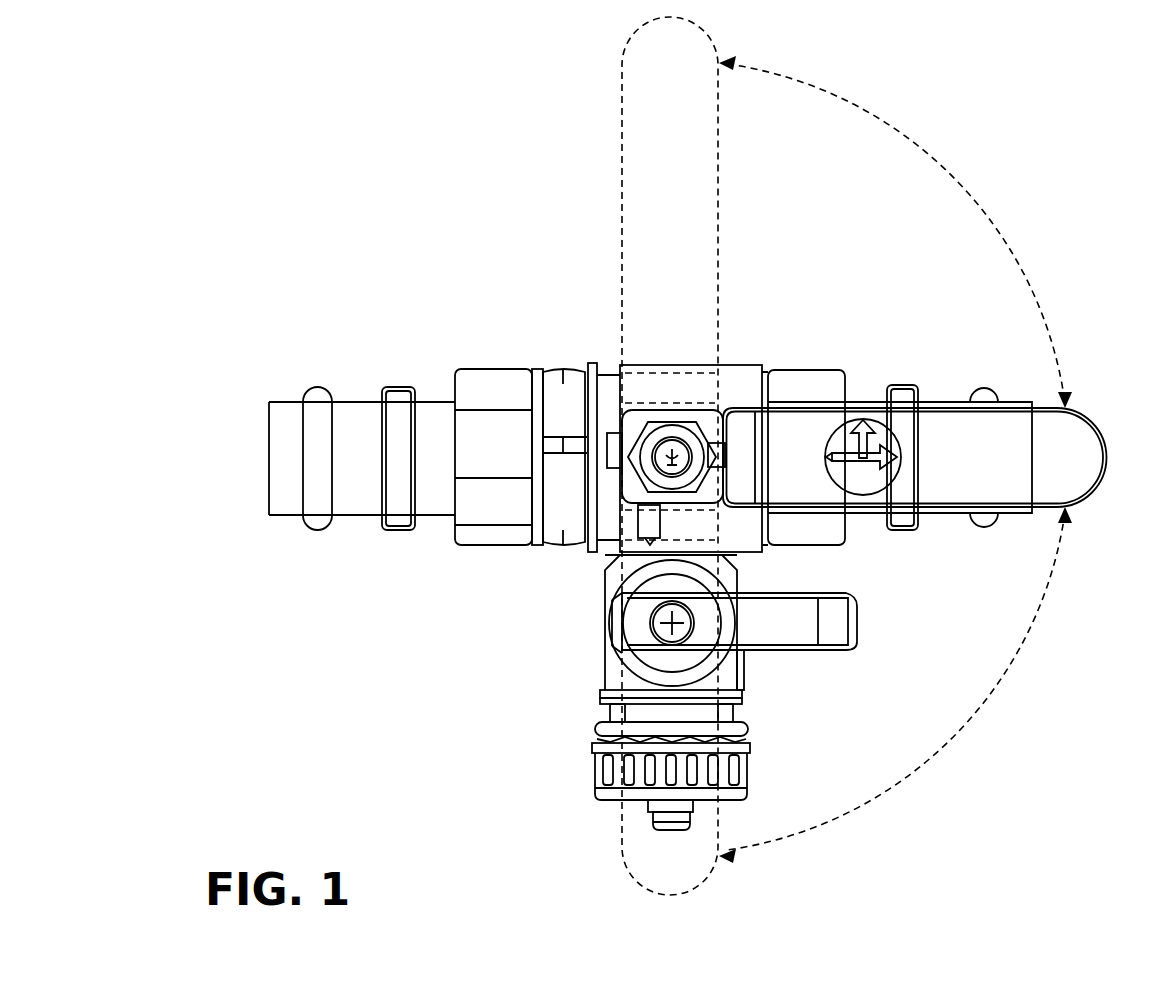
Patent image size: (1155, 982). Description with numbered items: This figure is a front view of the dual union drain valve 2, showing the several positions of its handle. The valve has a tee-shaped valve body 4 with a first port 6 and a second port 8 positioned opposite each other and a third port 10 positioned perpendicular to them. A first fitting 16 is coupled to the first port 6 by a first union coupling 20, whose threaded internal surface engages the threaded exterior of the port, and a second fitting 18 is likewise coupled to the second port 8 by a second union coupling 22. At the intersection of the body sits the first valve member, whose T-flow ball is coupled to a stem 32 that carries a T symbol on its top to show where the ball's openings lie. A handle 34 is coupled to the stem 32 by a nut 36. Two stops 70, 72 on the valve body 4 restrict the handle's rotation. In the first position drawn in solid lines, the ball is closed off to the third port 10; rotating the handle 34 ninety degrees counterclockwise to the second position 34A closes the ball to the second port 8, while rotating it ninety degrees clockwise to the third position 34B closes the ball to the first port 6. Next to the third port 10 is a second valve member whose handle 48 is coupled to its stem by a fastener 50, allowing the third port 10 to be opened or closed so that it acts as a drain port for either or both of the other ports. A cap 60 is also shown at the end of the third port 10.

The dual union drain valve 2 is at (742, 345).
The valve body 4 is at (677, 378).
The first port 6 is at (540, 368).
The second port 8 is at (768, 370).
The third port 10 is at (742, 700).
The first fitting 16 is at (358, 408).
The second fitting 18 is at (942, 402).
The first union coupling 20 is at (492, 368).
The second union coupling 22 is at (813, 383).
The stem 32 is at (652, 522).
The handle 34 is at (1083, 465).
The second position 34A is at (660, 82).
The third position 34B is at (650, 855).
The nut 36 is at (700, 437).
The handle 48 is at (845, 625).
The fastener 50 is at (672, 623).
The cap 60 is at (760, 790).
The stop 70 is at (604, 440).
The stop 72 is at (673, 463).